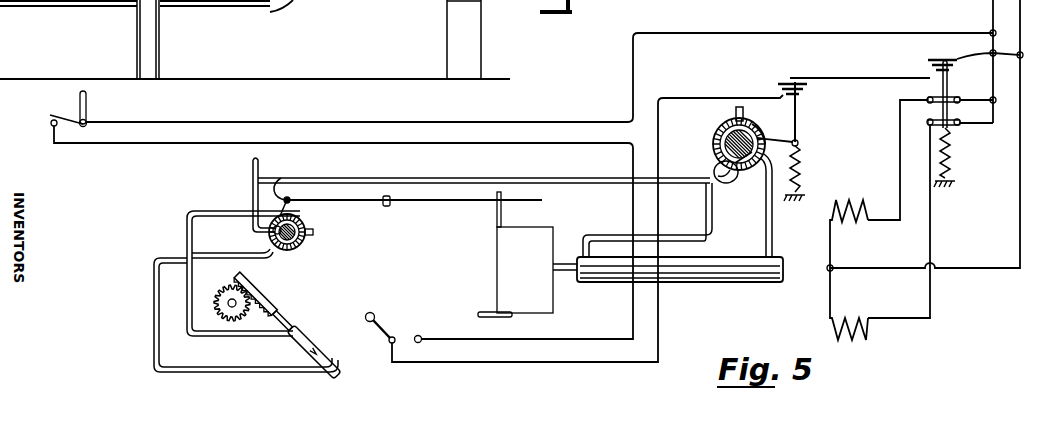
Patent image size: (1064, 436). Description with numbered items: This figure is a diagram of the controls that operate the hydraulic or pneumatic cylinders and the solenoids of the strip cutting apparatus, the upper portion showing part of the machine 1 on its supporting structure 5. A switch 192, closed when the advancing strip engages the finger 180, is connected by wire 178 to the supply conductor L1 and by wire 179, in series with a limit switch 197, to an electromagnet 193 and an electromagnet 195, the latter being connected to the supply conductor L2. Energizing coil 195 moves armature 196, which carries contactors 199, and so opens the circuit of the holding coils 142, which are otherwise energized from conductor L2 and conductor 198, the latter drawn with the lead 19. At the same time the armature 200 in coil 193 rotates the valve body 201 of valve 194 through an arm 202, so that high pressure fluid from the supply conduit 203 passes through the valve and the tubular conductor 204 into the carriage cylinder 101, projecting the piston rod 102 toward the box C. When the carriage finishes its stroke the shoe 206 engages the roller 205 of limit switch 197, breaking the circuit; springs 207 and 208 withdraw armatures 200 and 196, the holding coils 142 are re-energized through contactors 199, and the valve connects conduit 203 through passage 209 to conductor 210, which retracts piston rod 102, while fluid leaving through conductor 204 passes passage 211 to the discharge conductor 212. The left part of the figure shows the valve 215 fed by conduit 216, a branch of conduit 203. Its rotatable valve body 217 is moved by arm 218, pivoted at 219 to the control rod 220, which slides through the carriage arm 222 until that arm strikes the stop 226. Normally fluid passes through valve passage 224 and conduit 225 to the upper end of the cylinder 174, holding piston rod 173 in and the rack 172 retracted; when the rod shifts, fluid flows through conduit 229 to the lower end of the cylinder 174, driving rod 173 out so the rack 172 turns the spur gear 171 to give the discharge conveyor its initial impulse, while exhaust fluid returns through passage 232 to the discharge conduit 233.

The machine frame 1 is at (4, 10).
The supporting structure 5 is at (155, 53).
The conductor 19 is at (898, 160).
The carriage actuating cylinder 101 is at (707, 283).
The piston rod 102 is at (567, 281).
The holding coils 142 is at (850, 204).
The spur gear 171 is at (220, 290).
The rack 172 is at (276, 288).
The piston rod 173 is at (307, 315).
The cylinder 174 is at (328, 337).
The wire 178 is at (330, 123).
The wire 179 is at (336, 146).
The finger 180 is at (88, 107).
The switch 192 is at (52, 116).
The electromagnet or solenoid 193 is at (785, 81).
The valve 194 is at (713, 136).
The electromagnet or solenoid 195 is at (933, 62).
The armature 196 is at (947, 90).
The limit switch 197 is at (416, 336).
The conductor 198 is at (900, 166).
The contactors 199 is at (928, 121).
The armature 200 is at (800, 125).
The valve body 201 is at (760, 128).
The arm 202 is at (800, 137).
The tubular supply conduit 203 is at (529, 178).
The tubular conductor 204 is at (773, 232).
The roller 205 is at (376, 310).
The shoe 206 is at (485, 313).
The spring 207 is at (801, 172).
The spring 208 is at (948, 160).
The passage 209 is at (712, 168).
The tubular conductor 210 is at (713, 228).
The passage 211 is at (726, 124).
The discharge conductor 212 is at (739, 106).
The valve 215 is at (300, 247).
The conduit 216 is at (253, 192).
The rotatable valve body 217 is at (301, 224).
The arm 218 is at (281, 178).
The pivot 219 is at (290, 199).
The control bar or rod 220 is at (531, 198).
The extension member or arm 222 is at (503, 214).
The valve passage 224 is at (270, 231).
The conduit 225 is at (187, 241).
The stop 226 is at (392, 204).
The tubular conduit 229 is at (150, 318).
The passage 232 is at (285, 250).
The discharge conduit 233 is at (313, 233).
The controller box C is at (497, 260).
The electric wire or conductor L1 is at (984, 61).
The electric wire or conductor L2 is at (948, 268).